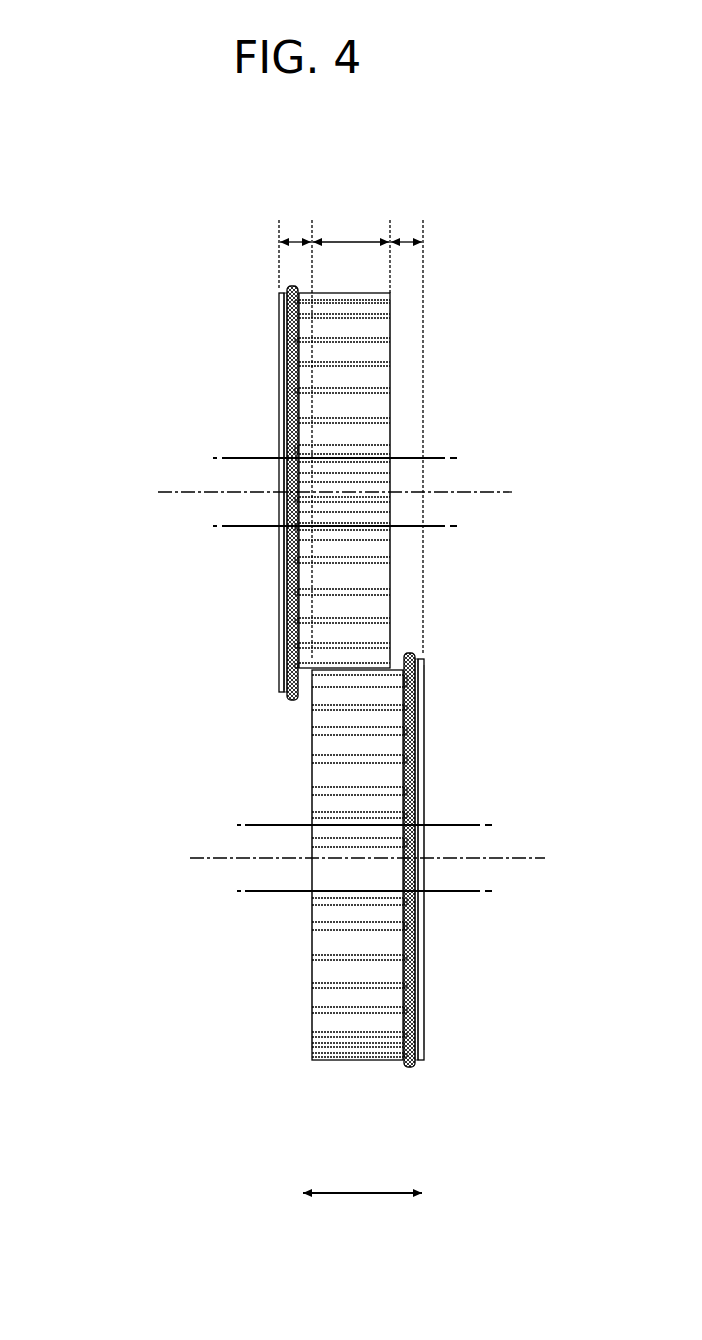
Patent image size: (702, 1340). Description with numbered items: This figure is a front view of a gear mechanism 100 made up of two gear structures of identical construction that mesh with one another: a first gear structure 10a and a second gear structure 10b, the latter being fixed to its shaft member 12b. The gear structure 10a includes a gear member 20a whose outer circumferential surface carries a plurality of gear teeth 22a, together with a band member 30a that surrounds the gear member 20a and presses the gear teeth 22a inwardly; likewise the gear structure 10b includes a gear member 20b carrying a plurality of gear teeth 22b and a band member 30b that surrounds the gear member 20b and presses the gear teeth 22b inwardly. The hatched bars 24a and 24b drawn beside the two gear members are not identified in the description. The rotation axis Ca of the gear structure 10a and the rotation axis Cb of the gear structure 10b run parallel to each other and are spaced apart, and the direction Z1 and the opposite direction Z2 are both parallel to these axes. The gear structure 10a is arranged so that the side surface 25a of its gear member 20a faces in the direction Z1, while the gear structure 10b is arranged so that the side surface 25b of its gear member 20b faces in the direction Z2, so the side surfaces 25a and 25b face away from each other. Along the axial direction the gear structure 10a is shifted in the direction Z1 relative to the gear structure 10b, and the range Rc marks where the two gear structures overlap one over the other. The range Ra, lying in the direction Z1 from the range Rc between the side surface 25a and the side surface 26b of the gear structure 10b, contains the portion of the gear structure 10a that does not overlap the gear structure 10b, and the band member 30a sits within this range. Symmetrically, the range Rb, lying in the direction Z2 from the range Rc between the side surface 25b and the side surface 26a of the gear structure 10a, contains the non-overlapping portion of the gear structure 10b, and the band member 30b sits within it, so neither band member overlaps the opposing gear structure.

The gear mechanism 100 is at (186, 553).
The gear structure 10a is at (433, 1021).
The gear structure 10b is at (254, 319).
The shaft member 12b is at (243, 457).
The gear member 20a is at (438, 707).
The gear member 20b is at (398, 407).
The gear teeth 22a is at (312, 987).
The gear teeth 22b is at (392, 555).
The first connection conductor 24a is at (419, 1071).
The second connection conductor 24b is at (288, 703).
The side surface 25a is at (425, 912).
The side surface 25b is at (278, 348).
The side surface 26a is at (313, 910).
The side surface 26b is at (392, 348).
The band member 30a is at (410, 970).
The band member 30b is at (290, 607).
The range Ra is at (406, 240).
The range Rb is at (297, 240).
The range Rc is at (351, 226).
The rotation axis Ca is at (387, 858).
The rotation axis Cb is at (355, 492).
The direction Z1 is at (446, 1193).
The direction Z2 is at (279, 1193).